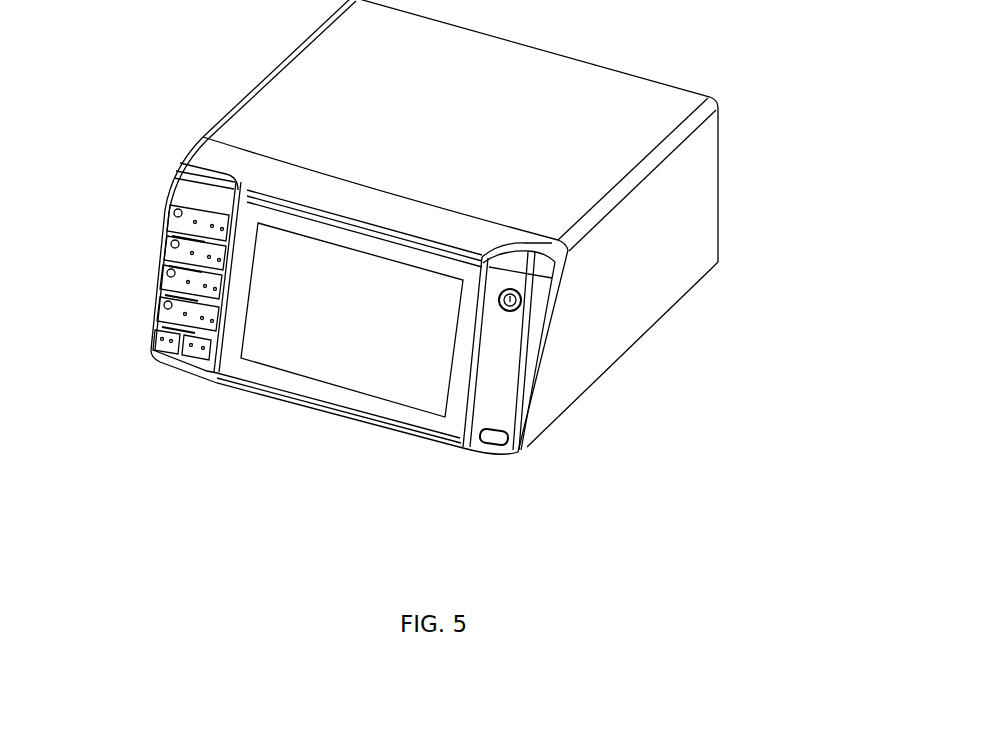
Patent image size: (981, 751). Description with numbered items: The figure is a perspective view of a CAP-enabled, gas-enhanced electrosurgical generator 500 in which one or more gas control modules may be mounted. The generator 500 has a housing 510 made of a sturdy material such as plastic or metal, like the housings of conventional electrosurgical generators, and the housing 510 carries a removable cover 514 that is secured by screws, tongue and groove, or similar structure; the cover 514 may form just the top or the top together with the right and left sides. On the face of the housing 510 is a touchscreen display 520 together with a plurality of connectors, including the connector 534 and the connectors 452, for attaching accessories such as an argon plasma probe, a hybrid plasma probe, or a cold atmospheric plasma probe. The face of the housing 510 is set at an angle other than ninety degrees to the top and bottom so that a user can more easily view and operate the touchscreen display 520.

The gas-enhanced electrosurgical generator 500 is at (743, 53).
The housing 510 is at (665, 278).
The removable cover 514 is at (310, 102).
The touchscreen display 520 is at (360, 372).
The connector ports 452 is at (183, 215).
The connector 534 is at (195, 343).